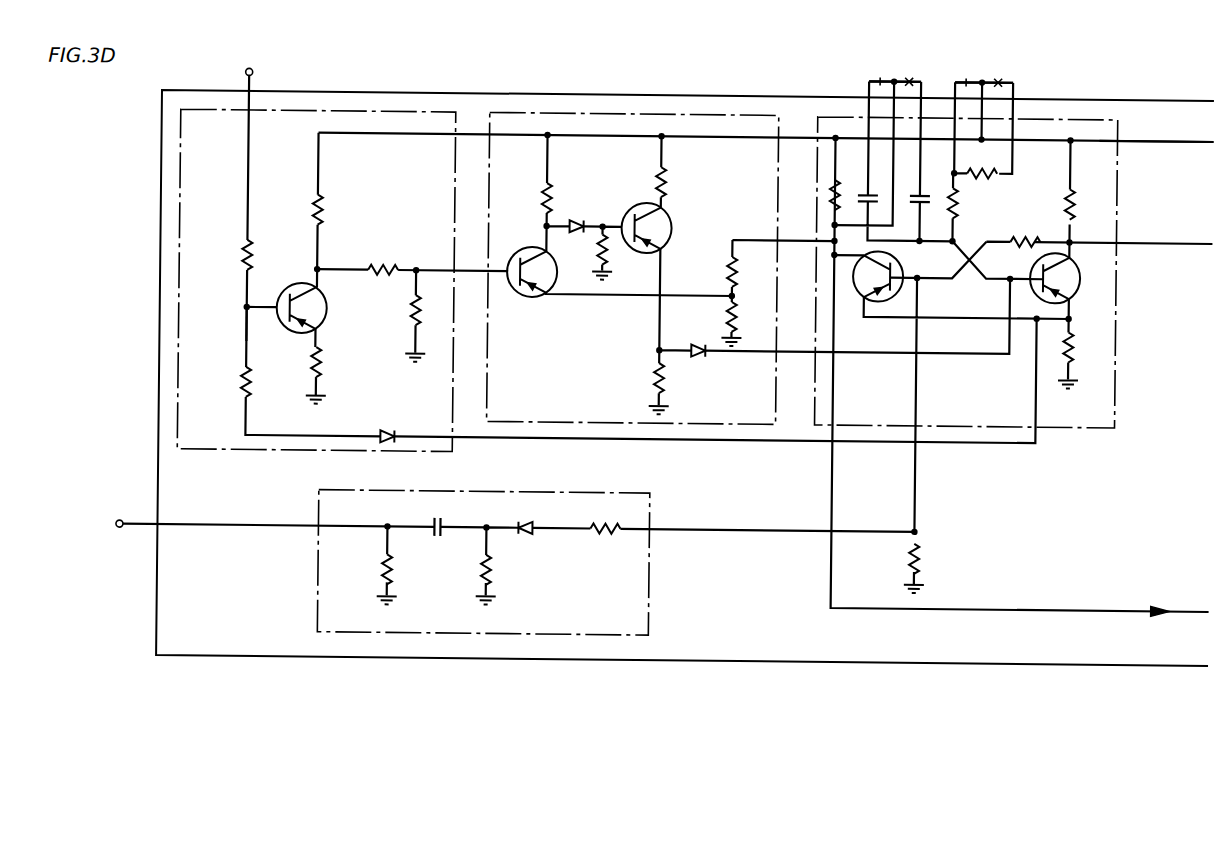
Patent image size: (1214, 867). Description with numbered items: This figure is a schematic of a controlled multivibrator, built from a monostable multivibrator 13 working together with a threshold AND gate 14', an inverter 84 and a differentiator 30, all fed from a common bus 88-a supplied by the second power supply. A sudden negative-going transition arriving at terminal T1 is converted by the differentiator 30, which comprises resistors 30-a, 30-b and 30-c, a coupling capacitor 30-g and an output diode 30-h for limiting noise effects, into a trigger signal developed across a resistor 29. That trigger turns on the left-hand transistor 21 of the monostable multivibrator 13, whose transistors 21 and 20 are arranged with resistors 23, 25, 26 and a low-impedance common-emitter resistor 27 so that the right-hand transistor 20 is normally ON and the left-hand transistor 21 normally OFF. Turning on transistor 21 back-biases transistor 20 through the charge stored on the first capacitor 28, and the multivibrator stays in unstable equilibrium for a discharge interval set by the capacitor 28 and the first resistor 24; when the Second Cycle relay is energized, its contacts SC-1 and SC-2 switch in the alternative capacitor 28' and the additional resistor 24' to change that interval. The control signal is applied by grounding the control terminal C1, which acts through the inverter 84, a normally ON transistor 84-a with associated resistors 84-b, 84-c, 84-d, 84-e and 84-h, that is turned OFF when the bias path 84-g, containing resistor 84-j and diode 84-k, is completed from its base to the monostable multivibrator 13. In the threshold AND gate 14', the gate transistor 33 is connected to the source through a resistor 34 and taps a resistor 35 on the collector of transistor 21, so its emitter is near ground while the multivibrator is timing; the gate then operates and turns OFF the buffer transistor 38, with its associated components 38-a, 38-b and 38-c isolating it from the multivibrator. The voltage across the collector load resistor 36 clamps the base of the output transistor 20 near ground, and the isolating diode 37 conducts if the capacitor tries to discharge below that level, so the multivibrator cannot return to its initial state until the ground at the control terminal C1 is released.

The control terminal C1 is at (262, 62).
The input terminal T1 is at (121, 514).
The inverter 84 is at (265, 108).
The inverter transistor 84-a is at (327, 316).
The inverter resistor 84-b is at (254, 253).
The inverter resistor 84-c is at (325, 364).
The inverter resistor 84-d is at (324, 211).
The inverter resistor 84-e is at (386, 262).
The bias path 84-g is at (249, 325).
The inverter resistor 84-h is at (413, 301).
The bias path resistor 84-j is at (245, 380).
The bias path diode 84-k is at (392, 428).
The threshold AND gate 14' is at (630, 244).
The resistor 34 is at (543, 185).
The buffer transistor 38 is at (673, 220).
The buffer transistor component 38-a is at (667, 176).
The buffer transistor component 38-b is at (581, 214).
The buffer transistor component 38-c is at (609, 257).
The gate transistor 33 is at (522, 295).
The resistor 35 is at (736, 288).
The collector resistor 36 is at (667, 378).
The isolating diode 37 is at (701, 338).
The monostable multivibrator 13 is at (1040, 110).
The Second Cycle relay contact SC-1 is at (895, 48).
The Second Cycle relay contact SC-2 is at (981, 48).
The common bus 88-a is at (1118, 131).
The resistor 23 is at (830, 184).
The first capacitor 28 is at (859, 179).
The alternative capacitor 28' is at (932, 179).
The first resistor 24 is at (970, 203).
The additional resistor 24' is at (1004, 182).
The resistor 25 is at (1024, 229).
The resistor 26 is at (1077, 205).
The second transistor 21 is at (862, 298).
The first transistor 20 is at (1068, 292).
The common-emitter resistor 27 is at (1076, 348).
The resistor 29 is at (922, 552).
The differentiator 30 is at (605, 629).
The differentiator resistor 30-a is at (362, 579).
The differentiator resistor 30-b is at (495, 565).
The differentiator resistor 30-c is at (606, 532).
The differentiator capacitor 30-g is at (440, 516).
The output diode 30-h is at (532, 517).